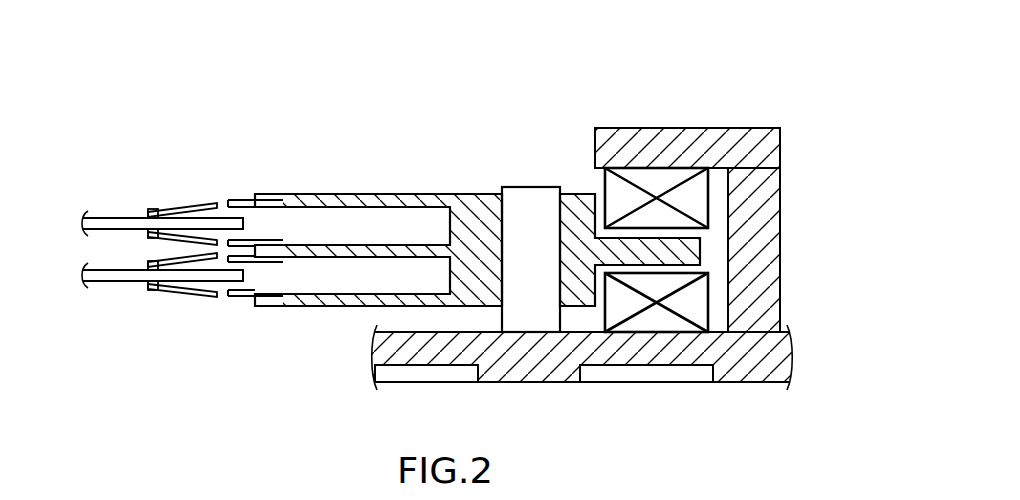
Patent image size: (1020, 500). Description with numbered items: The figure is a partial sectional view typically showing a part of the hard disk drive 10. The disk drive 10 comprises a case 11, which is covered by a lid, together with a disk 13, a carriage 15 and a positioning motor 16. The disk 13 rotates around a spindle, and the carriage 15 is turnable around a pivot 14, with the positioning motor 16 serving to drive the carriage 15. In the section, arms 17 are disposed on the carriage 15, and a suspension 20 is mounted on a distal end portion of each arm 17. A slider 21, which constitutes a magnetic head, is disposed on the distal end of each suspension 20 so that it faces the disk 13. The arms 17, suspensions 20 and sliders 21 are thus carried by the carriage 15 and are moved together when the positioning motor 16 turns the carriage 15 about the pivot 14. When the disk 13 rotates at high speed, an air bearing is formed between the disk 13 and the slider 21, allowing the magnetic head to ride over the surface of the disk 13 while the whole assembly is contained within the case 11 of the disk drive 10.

The hard disk drive 10 is at (644, 86).
The case 11 is at (738, 383).
The disk 13 is at (101, 223).
The pivot 14 is at (532, 196).
The carriage 15 is at (405, 190).
The positioning motor 16 is at (656, 322).
The arm 17 is at (320, 194).
The suspension 20 is at (191, 206).
The slider 21 is at (150, 212).